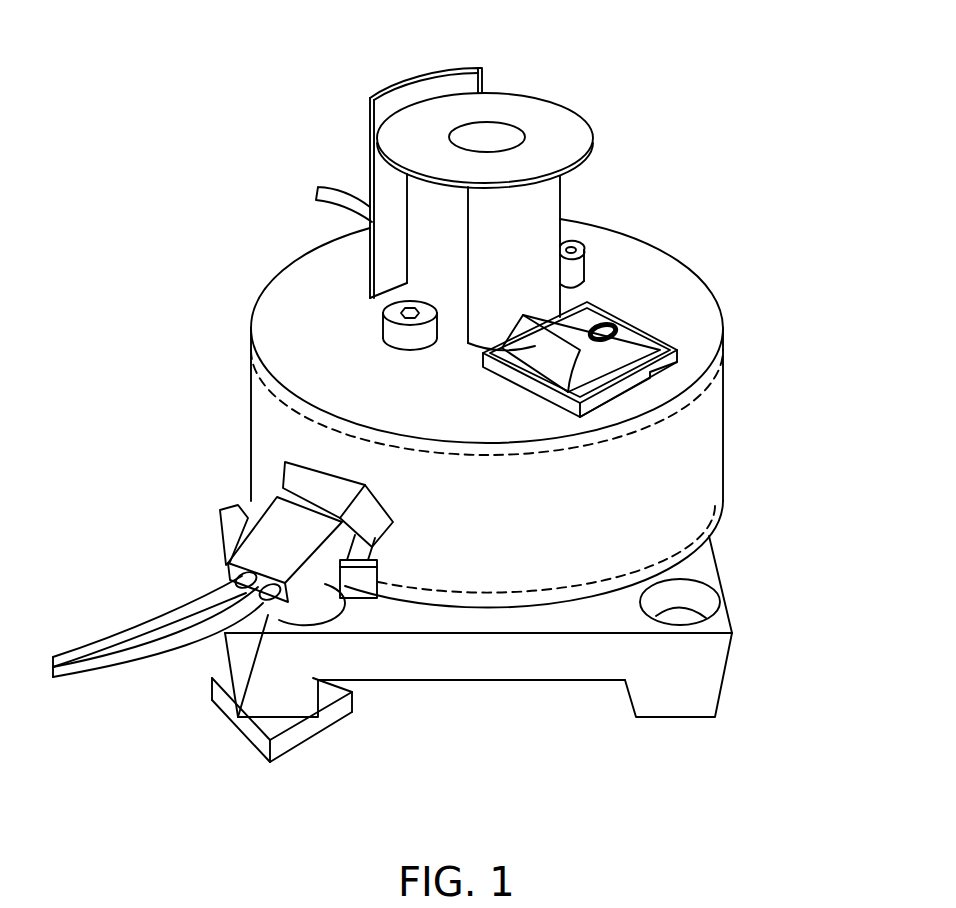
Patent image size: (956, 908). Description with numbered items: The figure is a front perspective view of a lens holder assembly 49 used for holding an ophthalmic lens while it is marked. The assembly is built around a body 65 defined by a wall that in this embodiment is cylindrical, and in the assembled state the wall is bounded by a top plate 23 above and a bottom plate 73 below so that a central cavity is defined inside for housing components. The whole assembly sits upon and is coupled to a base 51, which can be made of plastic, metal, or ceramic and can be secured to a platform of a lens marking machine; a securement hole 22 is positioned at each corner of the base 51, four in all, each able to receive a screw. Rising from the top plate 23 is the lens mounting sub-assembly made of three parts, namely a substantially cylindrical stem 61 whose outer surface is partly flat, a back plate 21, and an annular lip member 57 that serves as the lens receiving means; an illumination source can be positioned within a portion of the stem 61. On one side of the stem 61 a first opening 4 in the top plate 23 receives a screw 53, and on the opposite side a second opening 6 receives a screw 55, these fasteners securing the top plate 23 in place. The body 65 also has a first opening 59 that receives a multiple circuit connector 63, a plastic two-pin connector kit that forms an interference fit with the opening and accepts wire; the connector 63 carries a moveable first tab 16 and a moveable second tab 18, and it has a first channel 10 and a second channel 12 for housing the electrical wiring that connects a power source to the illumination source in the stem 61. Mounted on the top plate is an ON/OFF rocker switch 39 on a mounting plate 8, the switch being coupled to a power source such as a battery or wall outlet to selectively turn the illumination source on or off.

The lens holder assembly 49 is at (162, 236).
The back plate 21 is at (368, 118).
The annular lip member 57 is at (558, 135).
The stem 61 is at (435, 213).
The first opening 4 is at (393, 310).
The screw 53 is at (384, 324).
The second opening 6 is at (565, 253).
The screw 55 is at (560, 243).
The top plate 23 is at (647, 280).
The ON/OFF rocker switch 39 is at (627, 337).
The switch mounting plate 8 is at (645, 372).
The body 65 is at (668, 482).
The bottom plate 73 is at (513, 598).
The base 51 is at (673, 688).
The second channel 12 is at (290, 592).
The securement hole 22 is at (685, 617).
The first opening 59 is at (300, 462).
The multiple circuit connector 63 is at (265, 553).
The first tab 16 is at (233, 523).
The first channel 10 is at (233, 580).
The second tab 18 is at (358, 592).